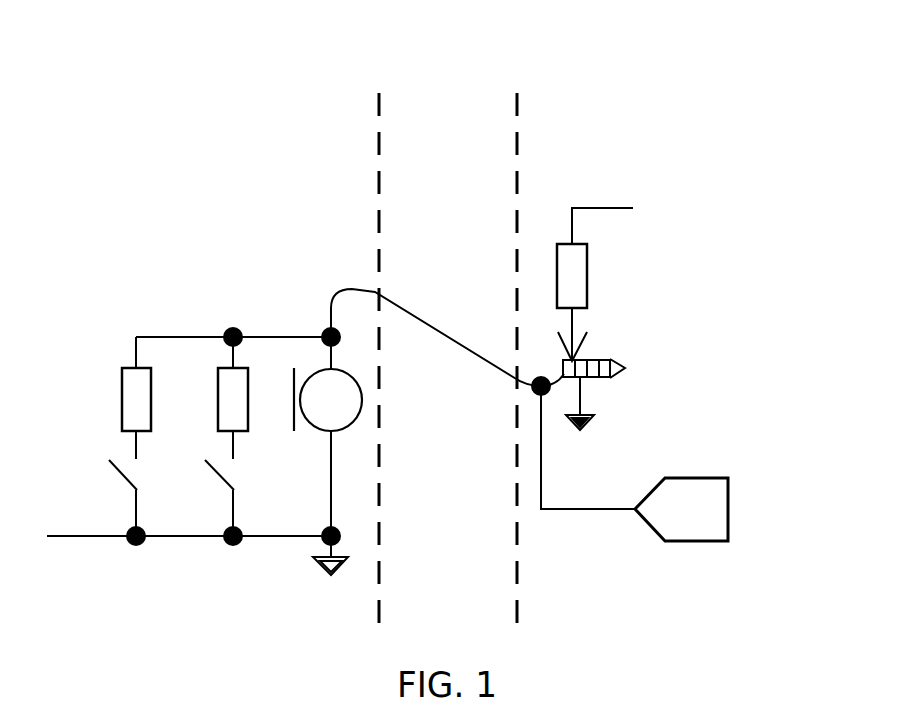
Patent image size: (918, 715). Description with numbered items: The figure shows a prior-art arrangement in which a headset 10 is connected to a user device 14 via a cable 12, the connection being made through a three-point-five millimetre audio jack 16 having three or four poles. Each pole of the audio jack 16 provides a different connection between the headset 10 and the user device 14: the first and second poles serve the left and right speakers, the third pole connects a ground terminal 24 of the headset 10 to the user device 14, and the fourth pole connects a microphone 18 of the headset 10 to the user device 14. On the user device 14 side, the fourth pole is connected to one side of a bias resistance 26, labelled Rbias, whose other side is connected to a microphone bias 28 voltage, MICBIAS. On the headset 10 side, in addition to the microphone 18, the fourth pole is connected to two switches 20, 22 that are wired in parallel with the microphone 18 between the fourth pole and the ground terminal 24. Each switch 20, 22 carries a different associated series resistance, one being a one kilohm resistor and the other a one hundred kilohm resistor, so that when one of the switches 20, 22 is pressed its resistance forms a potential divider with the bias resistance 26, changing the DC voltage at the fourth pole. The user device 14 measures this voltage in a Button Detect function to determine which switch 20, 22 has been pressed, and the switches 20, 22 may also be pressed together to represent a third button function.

The headset 10 is at (227, 93).
The cable 12 is at (355, 287).
The user device 14 is at (603, 57).
The 3.5 mm audio jack 16 is at (622, 363).
The microphone 18 is at (335, 418).
The first switch 20 is at (130, 463).
The second switch 22 is at (227, 463).
The ground terminal 24 is at (333, 573).
The bias resistance 26 is at (565, 242).
The microphone bias voltage 28 is at (748, 212).